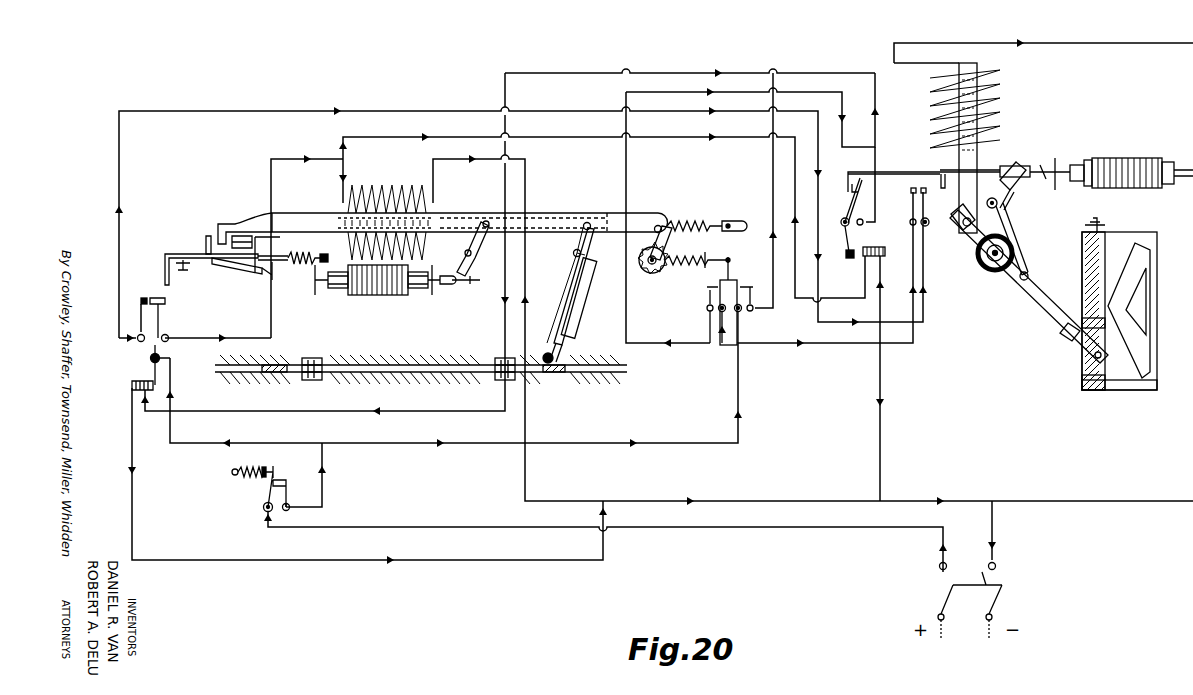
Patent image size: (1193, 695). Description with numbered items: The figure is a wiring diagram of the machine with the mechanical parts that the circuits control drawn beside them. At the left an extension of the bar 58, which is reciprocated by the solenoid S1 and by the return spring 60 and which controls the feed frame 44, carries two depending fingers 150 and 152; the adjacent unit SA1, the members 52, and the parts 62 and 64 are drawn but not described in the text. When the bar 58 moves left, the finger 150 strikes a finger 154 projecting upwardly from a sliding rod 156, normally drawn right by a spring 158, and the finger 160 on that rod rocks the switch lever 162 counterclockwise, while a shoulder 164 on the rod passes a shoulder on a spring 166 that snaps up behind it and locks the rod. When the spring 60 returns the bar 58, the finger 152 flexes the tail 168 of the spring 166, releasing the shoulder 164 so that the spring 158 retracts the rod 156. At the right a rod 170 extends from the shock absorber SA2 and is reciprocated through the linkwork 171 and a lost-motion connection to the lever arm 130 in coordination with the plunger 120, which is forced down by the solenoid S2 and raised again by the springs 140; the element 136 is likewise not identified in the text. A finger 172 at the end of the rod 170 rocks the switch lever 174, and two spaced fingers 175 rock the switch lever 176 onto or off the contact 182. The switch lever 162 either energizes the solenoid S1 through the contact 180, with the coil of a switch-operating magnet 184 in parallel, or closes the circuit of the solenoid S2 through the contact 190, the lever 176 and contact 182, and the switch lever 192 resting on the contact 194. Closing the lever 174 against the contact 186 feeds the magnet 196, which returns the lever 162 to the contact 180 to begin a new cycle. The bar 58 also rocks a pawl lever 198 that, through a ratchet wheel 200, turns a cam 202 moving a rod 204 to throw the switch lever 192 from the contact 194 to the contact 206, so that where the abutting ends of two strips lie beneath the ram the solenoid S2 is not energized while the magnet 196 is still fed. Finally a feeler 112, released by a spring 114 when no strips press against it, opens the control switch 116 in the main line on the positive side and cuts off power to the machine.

The feed frame 44 is at (420, 366).
The stop blocks 52 is at (310, 380).
The bar 58 is at (298, 212).
The solenoid S1 is at (380, 195).
The solenoid SA1 is at (388, 295).
The return spring 60 is at (706, 222).
The foot 62 is at (560, 356).
The piston link 64 is at (568, 296).
The feeler 112 is at (233, 476).
The spring 114 is at (258, 468).
The control switch 116 is at (288, 480).
The plunger 120 is at (1082, 368).
The lever arm 130 is at (1036, 300).
The threaded rod 136 is at (1085, 262).
The springs 140 is at (989, 270).
The finger 150 is at (218, 232).
The finger 152 is at (270, 239).
The finger 154 is at (206, 240).
The sliding rod 156 is at (262, 262).
The spring 158 is at (302, 265).
The finger 160 is at (165, 272).
The switch lever 162 is at (150, 343).
The shoulder 164 is at (240, 240).
The spring 166 is at (240, 268).
The tail 168 is at (272, 282).
The rod 170 is at (985, 170).
The linkwork 171 is at (1032, 244).
The finger 172 is at (847, 176).
The switch lever 174 is at (848, 262).
The spaced fingers 175 is at (942, 176).
The switch lever 176 is at (952, 216).
The contact 180 is at (166, 306).
The contact 182 is at (910, 180).
The switch-operating magnet 184 is at (883, 246).
The contact 186 is at (862, 182).
The contact 190 is at (140, 305).
The switch lever 192 is at (735, 300).
The contact 194 is at (706, 290).
The magnet 196 is at (132, 386).
The pawl lever 198 is at (660, 222).
The ratchet wheel 200 is at (646, 261).
The cam 202 is at (650, 274).
The rod 204 is at (710, 252).
The contact 206 is at (753, 289).
The solenoid S2 is at (998, 103).
The shock absorber SA2 is at (1118, 160).